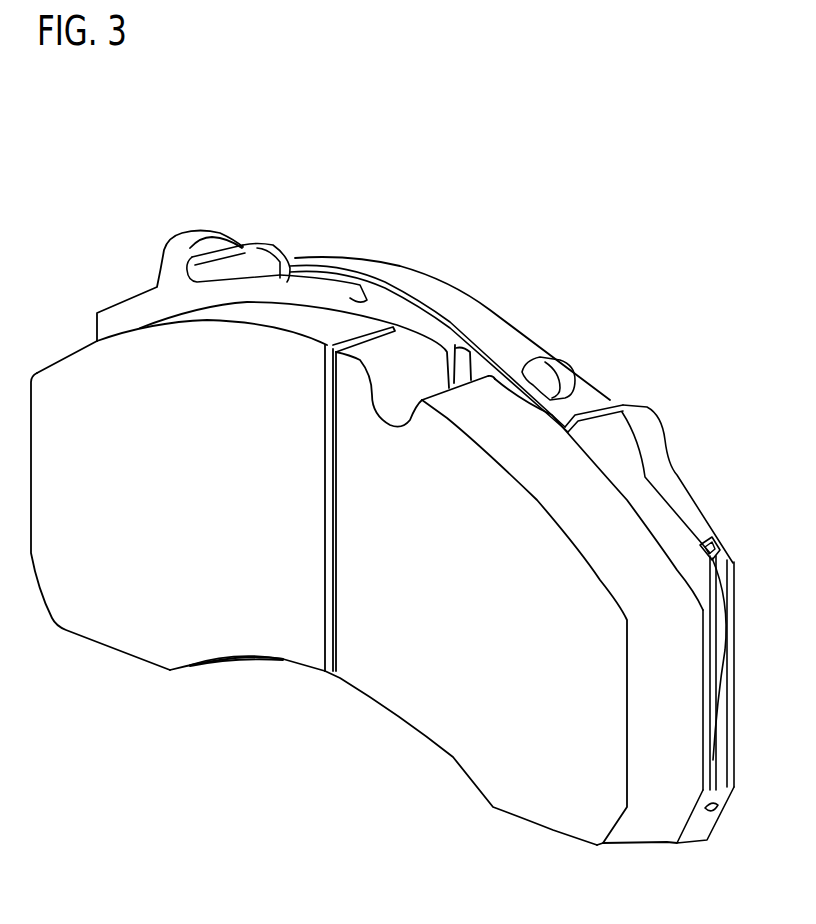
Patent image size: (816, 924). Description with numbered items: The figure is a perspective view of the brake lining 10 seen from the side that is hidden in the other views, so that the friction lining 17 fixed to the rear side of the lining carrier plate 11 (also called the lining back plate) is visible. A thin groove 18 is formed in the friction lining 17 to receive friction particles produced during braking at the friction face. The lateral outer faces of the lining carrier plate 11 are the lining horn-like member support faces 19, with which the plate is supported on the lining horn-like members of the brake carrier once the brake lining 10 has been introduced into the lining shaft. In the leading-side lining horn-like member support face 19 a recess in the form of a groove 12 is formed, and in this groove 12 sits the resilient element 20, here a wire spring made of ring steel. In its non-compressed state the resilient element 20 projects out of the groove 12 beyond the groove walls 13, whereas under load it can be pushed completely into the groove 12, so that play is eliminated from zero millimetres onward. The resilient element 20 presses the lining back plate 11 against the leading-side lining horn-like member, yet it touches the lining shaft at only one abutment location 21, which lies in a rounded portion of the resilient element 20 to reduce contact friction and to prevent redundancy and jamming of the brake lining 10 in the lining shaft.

The brake lining 10 is at (447, 64).
The lining carrier plate 11 is at (615, 460).
The groove 12 is at (722, 545).
The groove walls 13 is at (735, 558).
The friction lining 17 is at (410, 623).
The groove 18 is at (325, 672).
The lining horn-like member support faces 19 is at (734, 790).
The resilient element 20 is at (722, 552).
The abutment location 21 is at (733, 622).